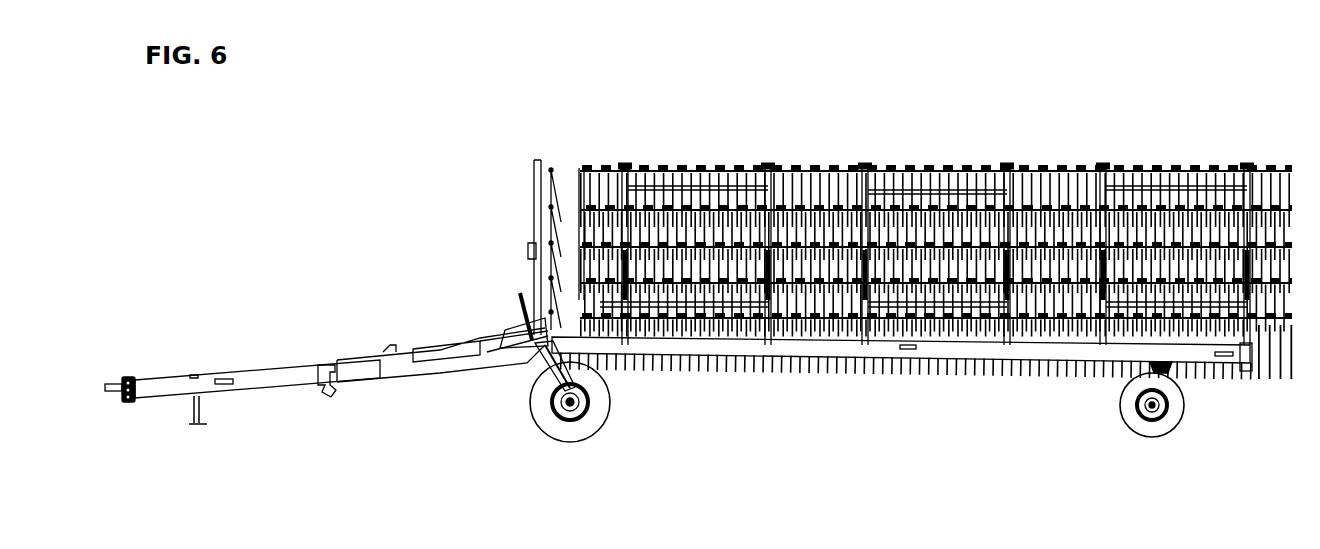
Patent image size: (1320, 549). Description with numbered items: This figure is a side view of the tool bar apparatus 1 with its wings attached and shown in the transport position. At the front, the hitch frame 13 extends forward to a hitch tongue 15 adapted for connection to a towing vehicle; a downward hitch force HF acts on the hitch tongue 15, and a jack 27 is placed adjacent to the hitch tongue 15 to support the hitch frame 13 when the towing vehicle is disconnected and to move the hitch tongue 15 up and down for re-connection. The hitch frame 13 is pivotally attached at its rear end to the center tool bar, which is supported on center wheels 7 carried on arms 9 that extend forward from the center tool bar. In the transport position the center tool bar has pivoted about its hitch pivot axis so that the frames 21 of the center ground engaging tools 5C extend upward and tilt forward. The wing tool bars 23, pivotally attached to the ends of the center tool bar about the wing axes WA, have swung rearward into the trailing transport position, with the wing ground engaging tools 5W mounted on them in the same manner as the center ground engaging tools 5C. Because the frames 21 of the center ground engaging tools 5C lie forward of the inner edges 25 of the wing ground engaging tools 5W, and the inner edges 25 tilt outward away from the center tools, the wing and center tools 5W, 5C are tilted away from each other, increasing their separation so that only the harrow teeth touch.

The tool bar apparatus 1 is at (1058, 115).
The wing ground engaging tools 5W is at (932, 170).
The center ground engaging tools 5C is at (537, 215).
The center wheels 7 is at (608, 415).
The arms 9 is at (543, 363).
The hitch frame 13 is at (252, 390).
The hitch tongue 15 is at (118, 385).
The frames 21 is at (537, 180).
The wing tool bars 23 is at (1065, 362).
The inner edges 25 is at (585, 187).
The jack 27 is at (196, 408).
The hitch force HF is at (129, 366).
The wing axes WA is at (566, 412).